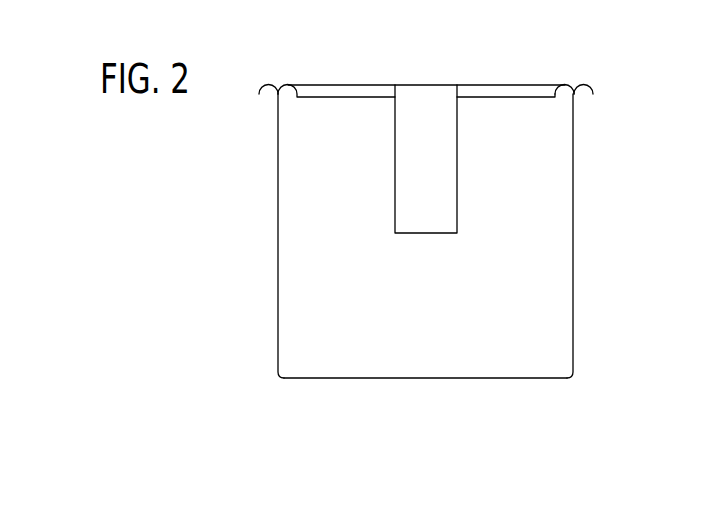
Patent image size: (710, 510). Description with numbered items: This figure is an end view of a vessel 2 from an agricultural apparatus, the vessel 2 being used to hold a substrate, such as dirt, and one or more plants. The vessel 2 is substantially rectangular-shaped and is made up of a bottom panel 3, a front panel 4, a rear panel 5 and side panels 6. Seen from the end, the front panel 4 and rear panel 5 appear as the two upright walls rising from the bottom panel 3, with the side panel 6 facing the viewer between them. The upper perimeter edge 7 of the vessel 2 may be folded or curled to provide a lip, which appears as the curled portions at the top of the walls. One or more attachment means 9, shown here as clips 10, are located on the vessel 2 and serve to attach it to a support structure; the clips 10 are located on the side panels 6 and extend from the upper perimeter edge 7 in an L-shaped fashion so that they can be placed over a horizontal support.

The vessel 2 is at (633, 92).
The bottom panel 3 is at (477, 379).
The front panel 4 is at (278, 196).
The rear panel 5 is at (573, 282).
The side panels 6 is at (547, 215).
The upper perimeter edge 7 is at (508, 85).
The attachment means 9 is at (465, 159).
The clips 10 is at (427, 176).